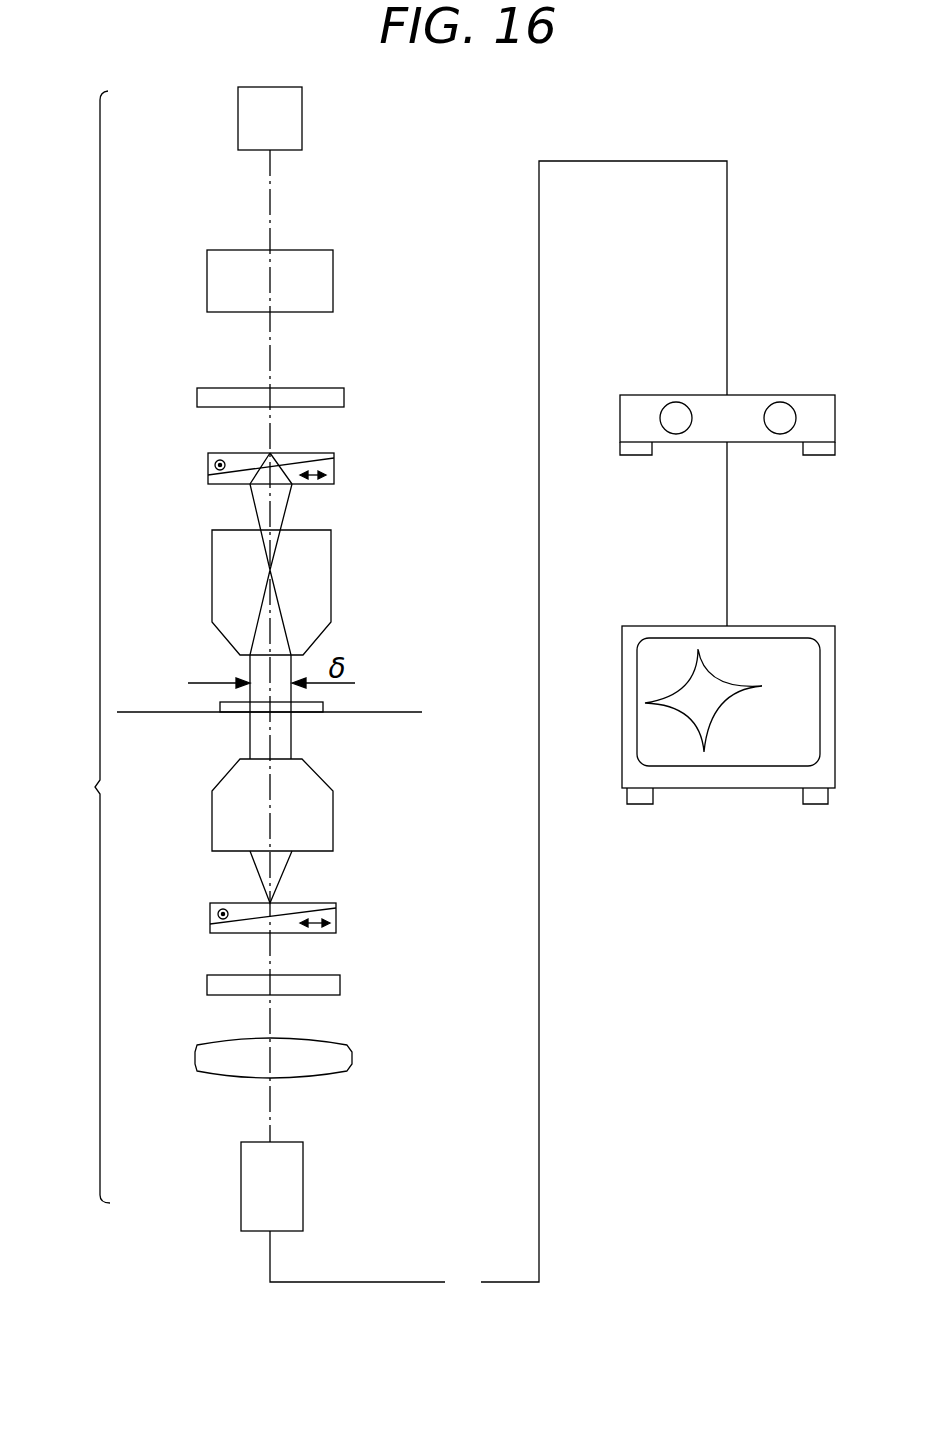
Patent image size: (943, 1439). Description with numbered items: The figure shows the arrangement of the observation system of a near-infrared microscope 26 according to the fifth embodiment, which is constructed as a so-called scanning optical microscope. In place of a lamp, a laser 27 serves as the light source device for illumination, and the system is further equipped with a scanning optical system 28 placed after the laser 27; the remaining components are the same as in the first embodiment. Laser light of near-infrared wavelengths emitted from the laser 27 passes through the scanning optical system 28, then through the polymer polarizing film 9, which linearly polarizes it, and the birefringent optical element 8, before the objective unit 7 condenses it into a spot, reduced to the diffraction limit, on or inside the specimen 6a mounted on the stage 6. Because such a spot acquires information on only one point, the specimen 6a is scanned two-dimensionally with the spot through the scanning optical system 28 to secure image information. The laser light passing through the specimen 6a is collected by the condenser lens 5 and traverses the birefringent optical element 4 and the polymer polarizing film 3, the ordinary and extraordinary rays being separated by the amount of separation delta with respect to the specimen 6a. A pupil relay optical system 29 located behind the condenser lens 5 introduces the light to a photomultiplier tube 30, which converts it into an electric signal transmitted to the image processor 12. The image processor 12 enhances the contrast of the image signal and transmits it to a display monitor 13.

The near-infrared microscope 26 is at (81, 647).
The laser 27 is at (238, 125).
The scanning optical system 28 is at (207, 284).
The polymer polarizing film 9 is at (197, 395).
The birefringent optical element 8 is at (208, 467).
The objective unit 7 is at (212, 587).
The stage 6 is at (135, 712).
The specimen 6a is at (325, 708).
The condenser lens 5 is at (212, 819).
The birefringent optical element 4 is at (210, 918).
The polymer polarizing film 3 is at (207, 985).
The pupil relay optical system 29 is at (195, 1058).
The photomultiplier tube 30 is at (241, 1190).
The image processor 12 is at (620, 418).
The display monitor 13 is at (622, 700).